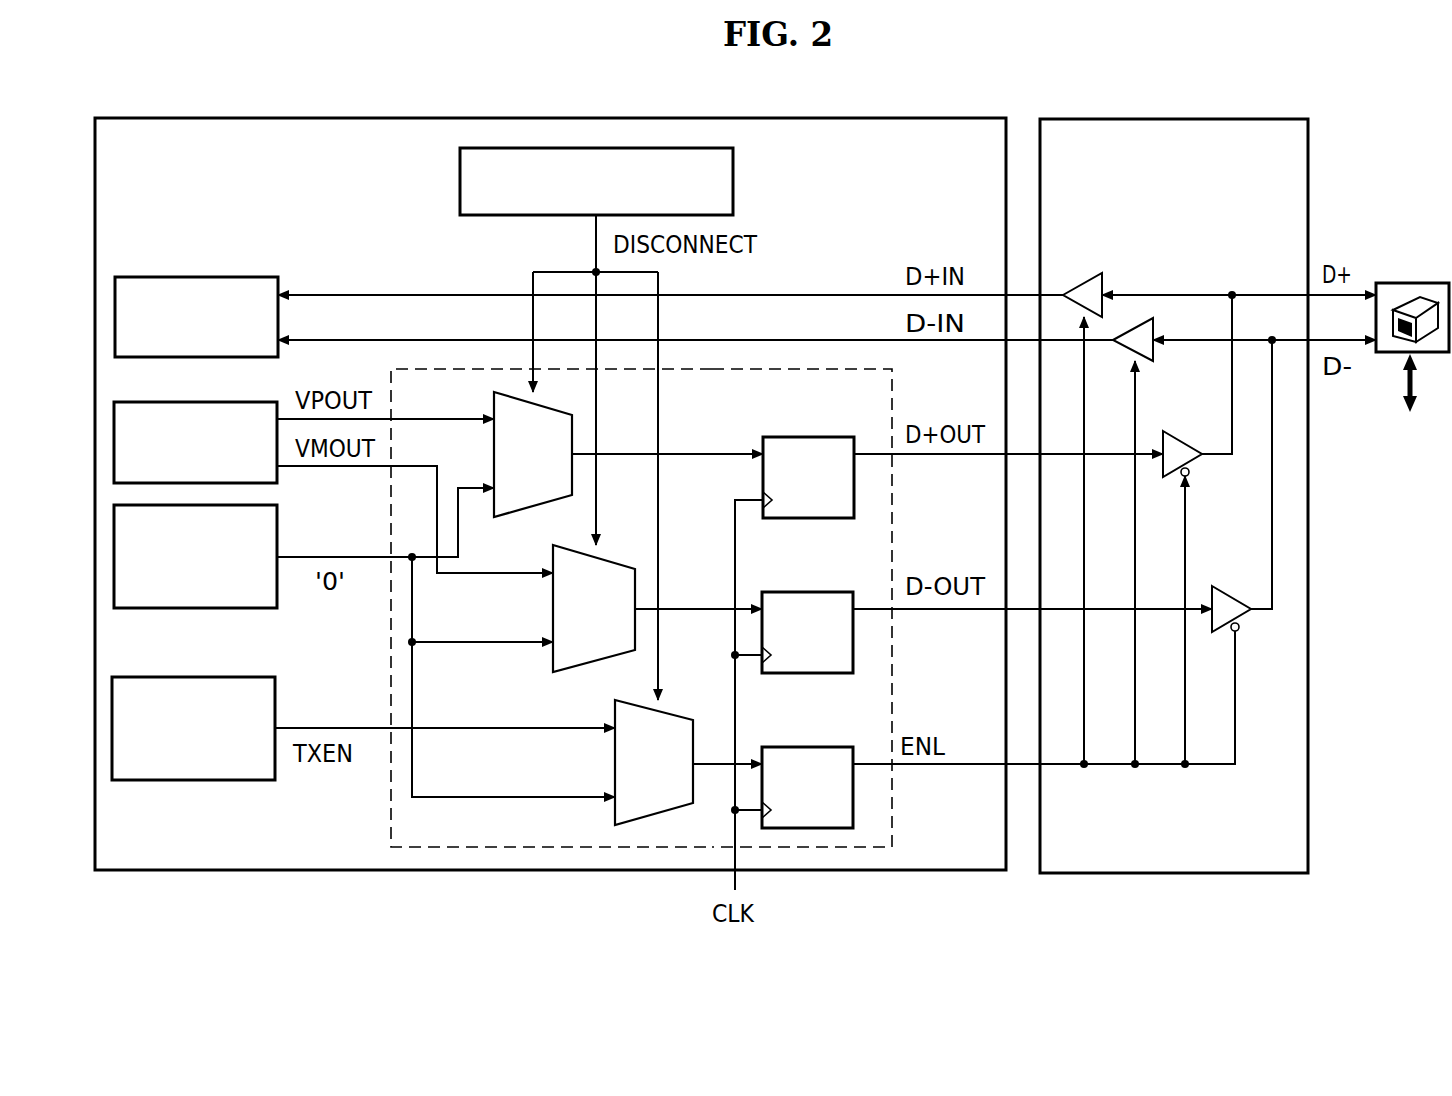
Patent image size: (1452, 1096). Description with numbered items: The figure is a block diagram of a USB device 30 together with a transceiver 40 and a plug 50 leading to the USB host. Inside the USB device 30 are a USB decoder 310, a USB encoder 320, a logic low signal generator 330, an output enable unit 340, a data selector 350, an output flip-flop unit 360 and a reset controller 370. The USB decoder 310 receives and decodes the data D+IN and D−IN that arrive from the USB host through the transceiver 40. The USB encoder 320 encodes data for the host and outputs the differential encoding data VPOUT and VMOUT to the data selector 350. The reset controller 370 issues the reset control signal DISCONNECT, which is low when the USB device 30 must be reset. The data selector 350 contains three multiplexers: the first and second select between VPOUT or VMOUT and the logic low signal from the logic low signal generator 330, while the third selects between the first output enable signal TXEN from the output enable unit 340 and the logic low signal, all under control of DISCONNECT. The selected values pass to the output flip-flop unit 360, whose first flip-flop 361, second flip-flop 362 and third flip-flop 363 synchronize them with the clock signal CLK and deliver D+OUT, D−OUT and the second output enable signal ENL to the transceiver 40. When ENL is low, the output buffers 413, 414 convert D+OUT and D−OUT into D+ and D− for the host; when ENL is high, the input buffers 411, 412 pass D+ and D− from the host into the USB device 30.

The USB device 30 is at (858, 118).
The transceiver 40 is at (1213, 119).
The plug 50 is at (1411, 283).
The USB decoder 310 is at (210, 277).
The USB encoder 320 is at (210, 402).
The logic low signal generator 330 is at (278, 525).
The output enable unit 340 is at (276, 708).
The data selector 350 is at (573, 847).
The output flip-flop unit 360 is at (802, 648).
The first flip-flop 361 is at (803, 437).
The second flip-flop 362 is at (802, 592).
The third flip-flop 363 is at (802, 747).
The reset controller 370 is at (733, 182).
The input buffer 411 is at (1104, 283).
The input buffer 412 is at (1153, 353).
The output buffer 413 is at (1192, 460).
The output buffer 414 is at (1242, 616).